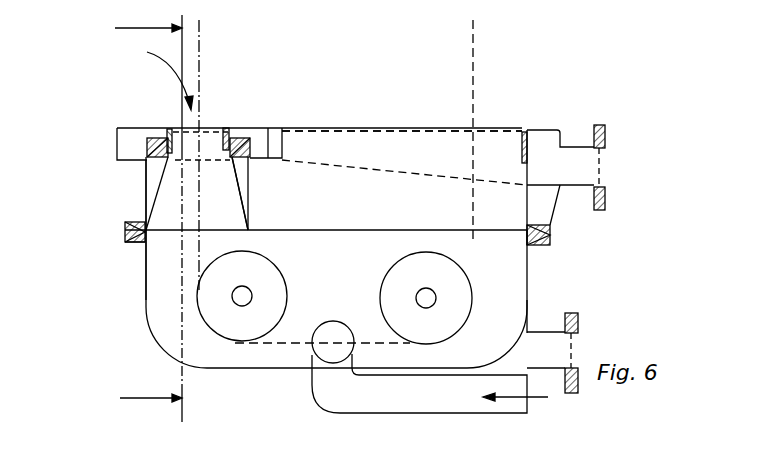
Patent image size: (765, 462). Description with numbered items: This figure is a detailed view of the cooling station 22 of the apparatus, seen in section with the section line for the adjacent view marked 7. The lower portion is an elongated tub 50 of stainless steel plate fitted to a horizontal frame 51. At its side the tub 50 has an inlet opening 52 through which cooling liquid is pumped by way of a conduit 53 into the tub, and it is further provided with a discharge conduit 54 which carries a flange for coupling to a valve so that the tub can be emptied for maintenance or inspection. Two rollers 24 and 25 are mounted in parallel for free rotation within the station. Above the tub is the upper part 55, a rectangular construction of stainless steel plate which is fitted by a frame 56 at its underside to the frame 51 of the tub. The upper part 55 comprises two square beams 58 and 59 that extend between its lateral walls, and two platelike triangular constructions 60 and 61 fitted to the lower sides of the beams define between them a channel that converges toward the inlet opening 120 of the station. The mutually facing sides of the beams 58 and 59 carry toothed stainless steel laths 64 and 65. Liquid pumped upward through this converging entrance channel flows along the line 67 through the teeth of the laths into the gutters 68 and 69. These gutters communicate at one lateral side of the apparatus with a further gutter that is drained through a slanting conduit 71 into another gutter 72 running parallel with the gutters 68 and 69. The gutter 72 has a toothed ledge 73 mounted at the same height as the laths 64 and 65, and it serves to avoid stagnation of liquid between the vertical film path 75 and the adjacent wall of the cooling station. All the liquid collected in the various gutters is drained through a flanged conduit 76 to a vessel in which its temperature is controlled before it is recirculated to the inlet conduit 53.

The section line 7- 7 is at (148, 212).
The cooling station 22 is at (131, 321).
The roller 24 is at (237, 328).
The roller 25 is at (462, 298).
The tub 50 is at (352, 276).
The frame 51 is at (132, 243).
The opening 52 is at (317, 353).
The conduit 53 is at (452, 405).
The discharge conduit 54 is at (542, 343).
The upper part 55 is at (374, 213).
The frame 56 is at (127, 222).
The square beam 58 is at (169, 133).
The square beam 59 is at (268, 140).
The triangular construction 60 is at (147, 186).
The triangular construction 61 is at (244, 184).
The toothed lath 64 is at (182, 128).
The toothed lath 65 is at (224, 128).
The line 67 is at (205, 128).
The gutter 68 is at (126, 141).
The gutter 69 is at (282, 140).
The slanting conduit 71 is at (367, 154).
The gutter 72 is at (543, 155).
The toothed ledge 73 is at (522, 147).
The vertical film path 75 is at (473, 88).
The conduit 76 is at (580, 178).
The inlet opening 120 is at (146, 76).